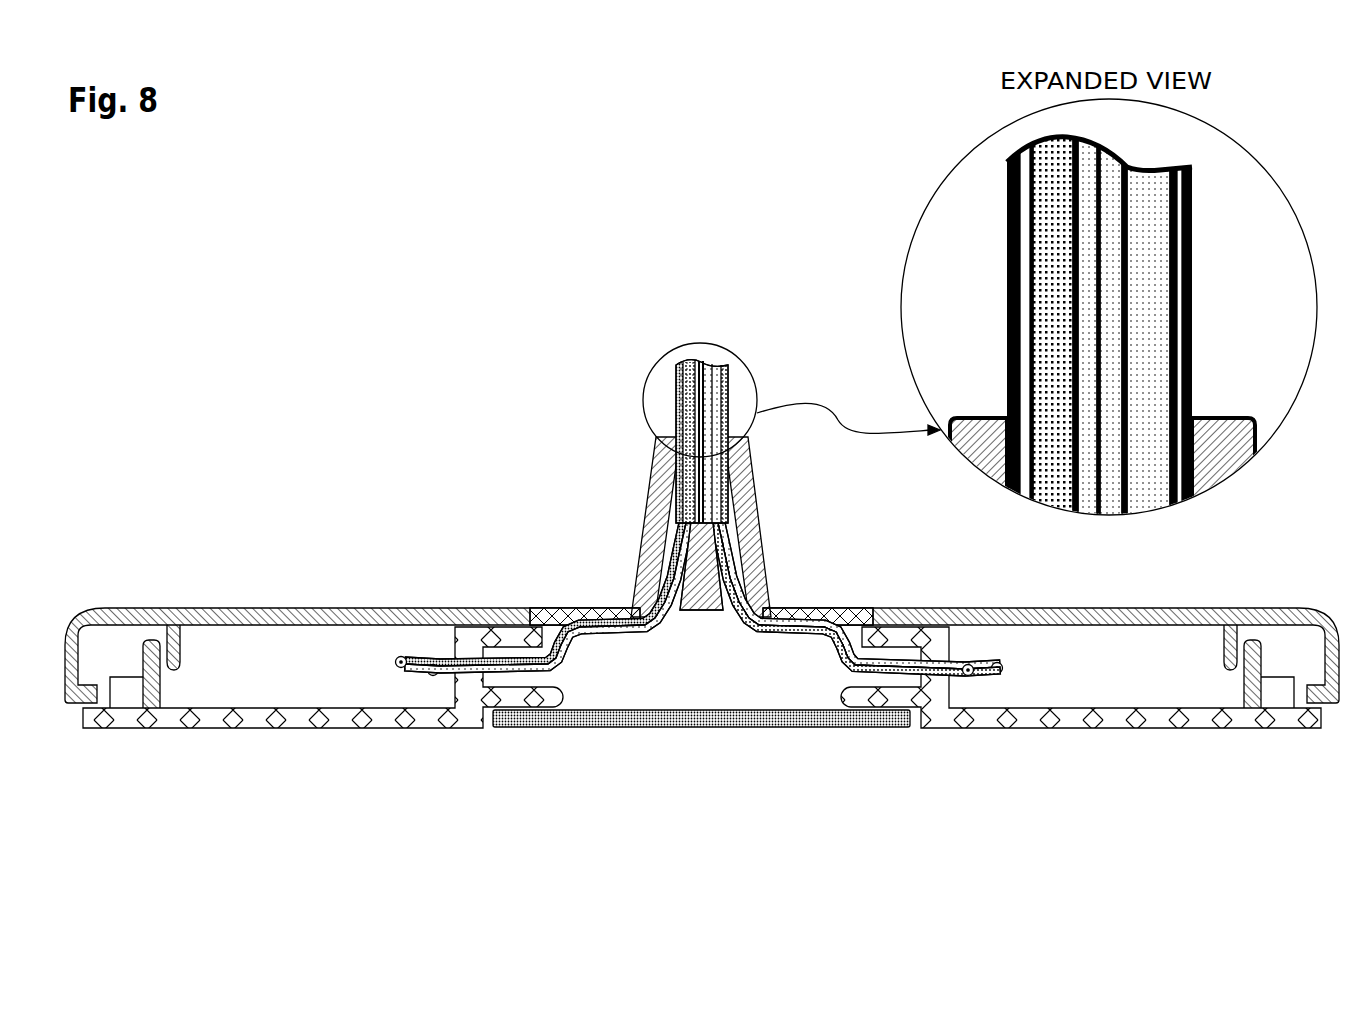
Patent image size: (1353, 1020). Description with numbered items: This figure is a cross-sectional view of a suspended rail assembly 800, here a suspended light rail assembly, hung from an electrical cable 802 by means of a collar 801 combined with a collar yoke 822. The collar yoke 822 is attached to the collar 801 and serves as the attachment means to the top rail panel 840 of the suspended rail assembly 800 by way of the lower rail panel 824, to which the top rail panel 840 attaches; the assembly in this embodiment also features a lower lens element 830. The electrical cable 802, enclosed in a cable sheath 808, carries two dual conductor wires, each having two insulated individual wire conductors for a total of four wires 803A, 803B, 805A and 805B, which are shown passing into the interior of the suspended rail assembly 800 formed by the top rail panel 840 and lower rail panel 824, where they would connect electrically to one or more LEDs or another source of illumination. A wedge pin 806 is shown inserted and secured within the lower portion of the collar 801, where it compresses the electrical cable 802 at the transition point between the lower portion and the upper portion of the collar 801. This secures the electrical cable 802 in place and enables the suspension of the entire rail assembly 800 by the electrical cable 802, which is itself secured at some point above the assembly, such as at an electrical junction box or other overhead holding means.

The suspended rail assembly 800 is at (454, 238).
The collar 801 is at (650, 525).
The electrical cable 802 is at (697, 343).
The wire conductor 803A is at (1050, 190).
The wire conductor 803B is at (1093, 258).
The wire conductor 805A is at (1144, 312).
The wire conductor 805B is at (1114, 360).
The wedge pin 806 is at (700, 585).
The cable sheath 808 is at (1022, 398).
The collar yoke 822 is at (553, 606).
The lower rail panel 824 is at (257, 715).
The lens element 830 is at (697, 727).
The top rail panel 840 is at (255, 608).